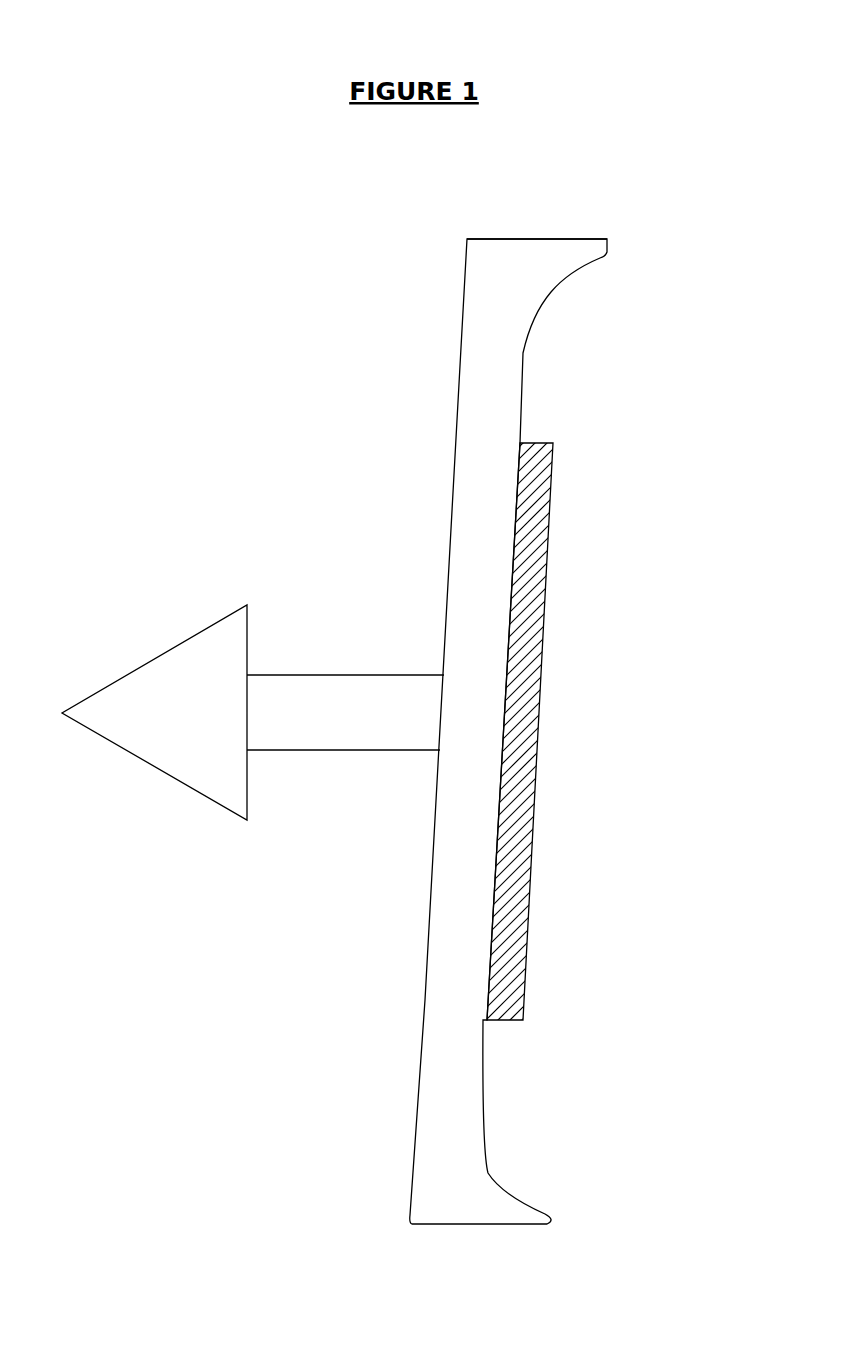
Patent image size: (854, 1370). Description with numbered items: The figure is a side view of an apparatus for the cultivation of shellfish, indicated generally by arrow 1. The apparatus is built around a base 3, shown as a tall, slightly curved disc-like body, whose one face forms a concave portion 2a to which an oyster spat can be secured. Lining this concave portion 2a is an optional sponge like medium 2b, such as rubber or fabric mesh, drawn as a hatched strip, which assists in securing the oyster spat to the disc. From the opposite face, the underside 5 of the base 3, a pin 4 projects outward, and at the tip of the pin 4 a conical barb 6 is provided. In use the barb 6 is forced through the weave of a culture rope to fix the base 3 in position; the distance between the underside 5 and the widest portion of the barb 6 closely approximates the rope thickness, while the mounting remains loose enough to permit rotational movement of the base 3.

The apparatus for the cultivation of shellfish 1 is at (208, 330).
The concave portion 2a is at (612, 874).
The sponge like medium 2b is at (547, 620).
The base 3 is at (513, 238).
The pin 4 is at (342, 675).
The underside 5 is at (455, 428).
The conical barb 6 is at (158, 657).